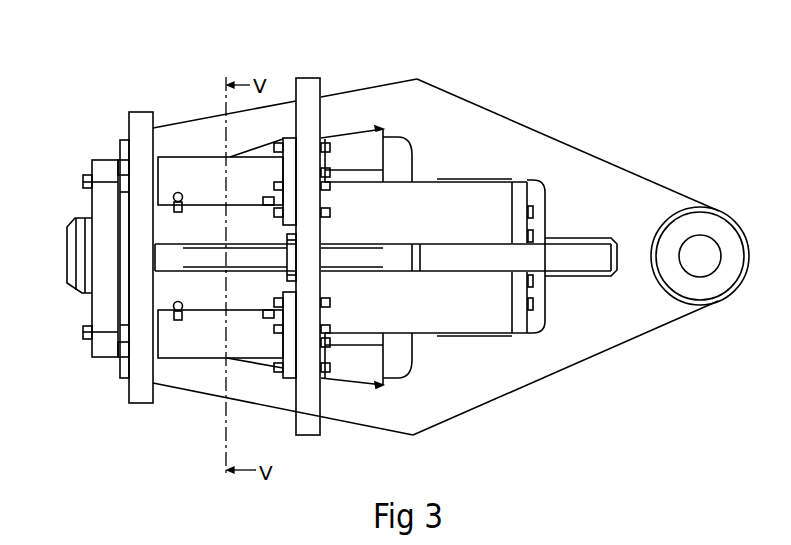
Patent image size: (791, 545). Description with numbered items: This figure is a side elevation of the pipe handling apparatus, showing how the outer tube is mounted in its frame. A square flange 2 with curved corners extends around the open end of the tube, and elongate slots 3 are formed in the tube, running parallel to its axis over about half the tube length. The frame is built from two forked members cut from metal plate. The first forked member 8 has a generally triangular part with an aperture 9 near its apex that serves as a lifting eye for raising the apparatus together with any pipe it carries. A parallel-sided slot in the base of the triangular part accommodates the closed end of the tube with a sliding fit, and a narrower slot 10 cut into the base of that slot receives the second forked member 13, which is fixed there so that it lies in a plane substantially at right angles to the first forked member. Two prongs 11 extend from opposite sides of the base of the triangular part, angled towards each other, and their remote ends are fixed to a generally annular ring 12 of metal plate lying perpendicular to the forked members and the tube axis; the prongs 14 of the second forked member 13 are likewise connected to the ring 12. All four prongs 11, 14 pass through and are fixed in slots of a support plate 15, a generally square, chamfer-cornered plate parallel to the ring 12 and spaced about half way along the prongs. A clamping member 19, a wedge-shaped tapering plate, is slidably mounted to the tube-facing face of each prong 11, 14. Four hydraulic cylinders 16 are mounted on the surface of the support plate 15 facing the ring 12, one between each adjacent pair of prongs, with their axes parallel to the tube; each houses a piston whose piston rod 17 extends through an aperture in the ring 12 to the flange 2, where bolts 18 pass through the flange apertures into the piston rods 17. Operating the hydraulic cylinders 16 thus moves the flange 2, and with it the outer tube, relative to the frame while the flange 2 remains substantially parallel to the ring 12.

The square flange 2 is at (493, 307).
The elongate slots 3 is at (233, 277).
The first forked member 8 is at (647, 312).
The aperture 9 is at (695, 262).
The slot 10 is at (587, 240).
The prongs 11 is at (192, 135).
The annular ring 12 is at (139, 385).
The second forked member 13 is at (553, 257).
The prongs 14 is at (200, 260).
The support plate 15 is at (303, 88).
The hydraulic cylinders 16 is at (197, 167).
The piston rod 17 is at (122, 175).
The bolts 18 is at (84, 178).
The clamping member 19 is at (355, 145).